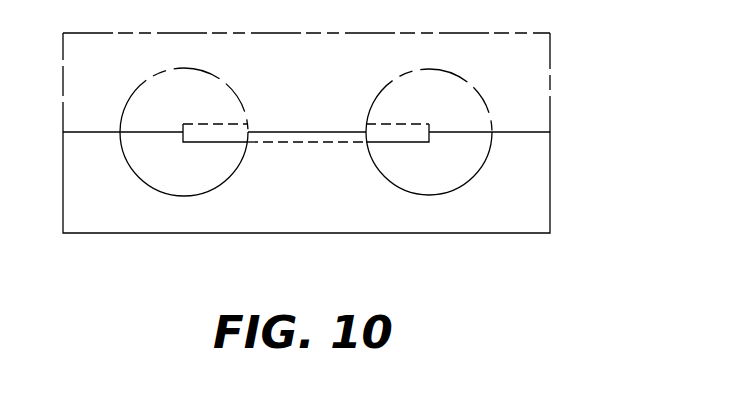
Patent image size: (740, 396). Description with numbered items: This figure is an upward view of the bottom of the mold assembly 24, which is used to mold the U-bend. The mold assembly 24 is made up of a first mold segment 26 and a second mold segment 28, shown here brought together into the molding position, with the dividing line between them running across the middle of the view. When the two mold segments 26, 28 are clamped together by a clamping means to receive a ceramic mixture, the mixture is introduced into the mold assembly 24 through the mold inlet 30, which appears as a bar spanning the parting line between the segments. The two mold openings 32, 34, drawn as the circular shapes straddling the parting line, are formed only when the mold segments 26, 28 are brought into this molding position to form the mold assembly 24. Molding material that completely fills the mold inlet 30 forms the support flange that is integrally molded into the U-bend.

The mold assembly 24 is at (354, 121).
The first mold segment 26 is at (540, 180).
The second mold segment 28 is at (542, 90).
The mold inlet 30 is at (321, 140).
The mold opening 32 is at (186, 181).
The mold opening 34 is at (439, 182).